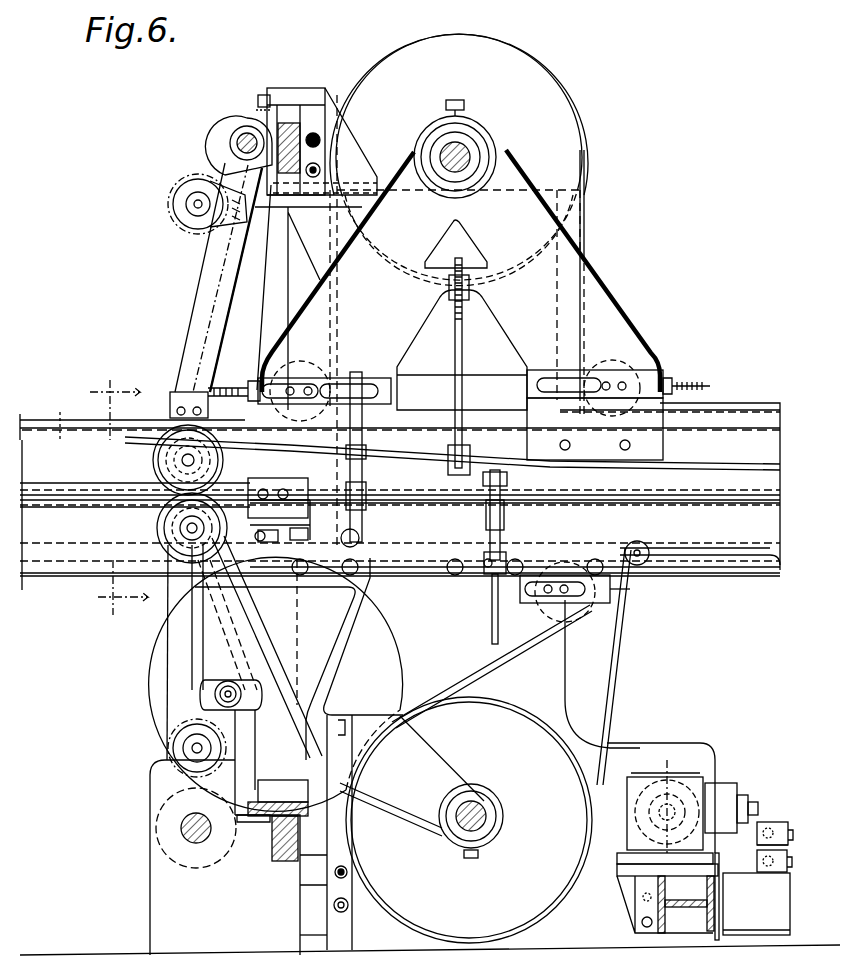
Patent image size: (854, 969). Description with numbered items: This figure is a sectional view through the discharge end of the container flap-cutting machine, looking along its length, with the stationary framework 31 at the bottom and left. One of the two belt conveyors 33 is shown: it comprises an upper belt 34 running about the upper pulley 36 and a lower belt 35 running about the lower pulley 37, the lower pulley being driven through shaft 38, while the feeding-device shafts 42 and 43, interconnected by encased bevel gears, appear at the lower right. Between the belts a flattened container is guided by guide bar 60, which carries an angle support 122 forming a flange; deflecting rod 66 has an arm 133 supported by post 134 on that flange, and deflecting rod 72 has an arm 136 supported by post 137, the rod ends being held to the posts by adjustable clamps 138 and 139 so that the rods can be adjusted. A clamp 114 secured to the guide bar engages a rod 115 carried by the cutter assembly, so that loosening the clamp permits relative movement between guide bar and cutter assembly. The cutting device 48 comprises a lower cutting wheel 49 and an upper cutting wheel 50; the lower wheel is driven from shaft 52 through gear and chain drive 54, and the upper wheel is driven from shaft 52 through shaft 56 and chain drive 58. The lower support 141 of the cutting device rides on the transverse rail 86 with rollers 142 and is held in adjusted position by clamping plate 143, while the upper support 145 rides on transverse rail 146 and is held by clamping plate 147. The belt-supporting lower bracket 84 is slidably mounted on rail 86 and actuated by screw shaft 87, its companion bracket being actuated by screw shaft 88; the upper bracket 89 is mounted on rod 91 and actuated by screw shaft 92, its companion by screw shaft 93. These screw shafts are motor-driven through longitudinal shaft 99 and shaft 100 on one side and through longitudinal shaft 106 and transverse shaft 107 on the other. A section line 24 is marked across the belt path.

The section line 24 is at (119, 493).
The stationary framework 31 is at (142, 899).
The conveyor 33 is at (60, 428).
The upper belt 34 is at (24, 420).
The lower belt 35 is at (25, 576).
The pulley 36 is at (540, 88).
The pulley 37 is at (540, 900).
The shaft 38 is at (480, 808).
The shaft 42 is at (667, 773).
The shaft 43 is at (752, 802).
The cutting device 48 is at (168, 488).
The lower cutting wheel 49 is at (170, 540).
The upper cutting wheel 50 is at (175, 430).
The shaft 52 is at (182, 822).
The gear and chain drive 54 is at (170, 676).
The shaft 56 is at (237, 143).
The chain drive 58 is at (212, 258).
The guide bar 60 is at (718, 468).
The deflecting rod 66 is at (424, 565).
The deflecting rod 72 is at (478, 460).
The lower bracket 84 is at (340, 652).
The rail 86 is at (285, 820).
The screw shaft 87 is at (334, 872).
The screw shaft 88 is at (348, 905).
The upper bracket 89 is at (600, 300).
The rod 91 is at (468, 150).
The screw shaft 92 is at (320, 140).
The screw shaft 93 is at (320, 170).
The longitudinal shaft 99 is at (786, 884).
The shaft 100 is at (760, 866).
The longitudinal shaft 106 is at (764, 822).
The transverse shaft 107 is at (760, 842).
The clamp 114 is at (292, 518).
The rod 115 is at (282, 540).
The angle support 122 is at (655, 504).
The arm 133 is at (486, 556).
The post 134 is at (502, 522).
The arm 136 is at (364, 450).
The post 137 is at (366, 510).
The adjustable clamp 138 is at (490, 575).
The adjustable clamp 139 is at (316, 448).
The lower support 141 is at (248, 645).
The roller 142 is at (282, 790).
The clamping plate 143 is at (242, 822).
The upper support 145 is at (206, 330).
The transverse rail 146 is at (284, 128).
The clamping plate 147 is at (258, 118).